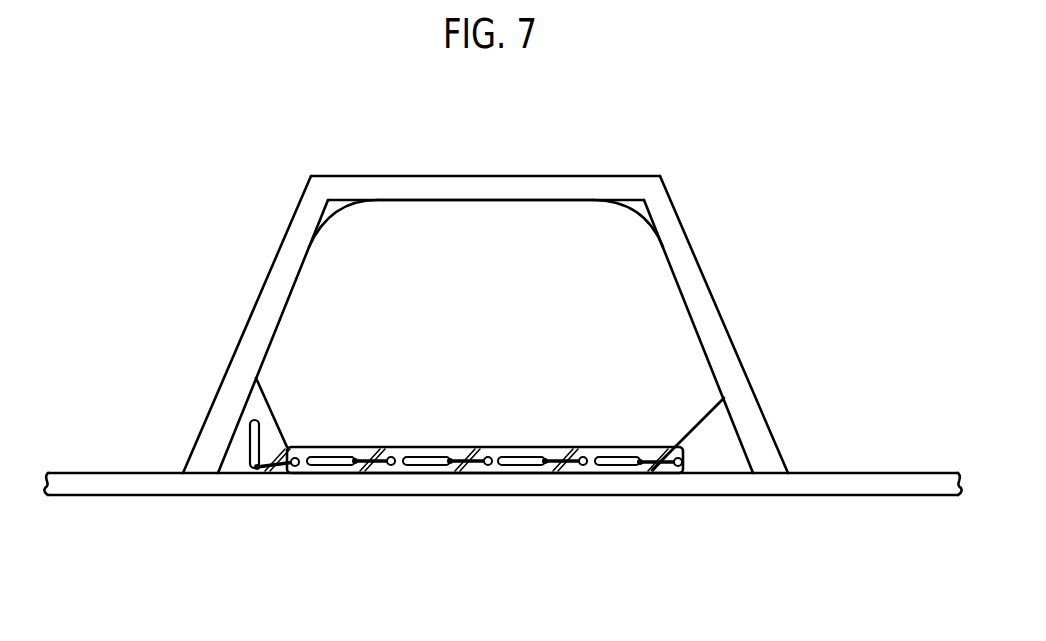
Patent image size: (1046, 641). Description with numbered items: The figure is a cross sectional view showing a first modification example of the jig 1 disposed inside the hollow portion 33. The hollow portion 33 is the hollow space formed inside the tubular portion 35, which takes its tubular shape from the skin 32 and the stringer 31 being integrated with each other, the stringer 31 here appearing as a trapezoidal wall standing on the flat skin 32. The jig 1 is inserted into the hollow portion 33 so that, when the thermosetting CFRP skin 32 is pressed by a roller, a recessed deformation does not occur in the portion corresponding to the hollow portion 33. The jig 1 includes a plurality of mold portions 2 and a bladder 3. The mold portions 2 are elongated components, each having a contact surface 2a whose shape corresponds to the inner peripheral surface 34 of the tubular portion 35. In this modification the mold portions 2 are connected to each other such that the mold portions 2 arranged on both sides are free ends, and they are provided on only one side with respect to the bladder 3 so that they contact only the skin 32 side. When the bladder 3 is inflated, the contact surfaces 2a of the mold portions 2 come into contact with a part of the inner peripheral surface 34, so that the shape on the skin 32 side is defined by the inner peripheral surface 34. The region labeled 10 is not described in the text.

The jig 1 is at (502, 331).
The mold portion 2 is at (232, 460).
The contact surface 2a is at (233, 423).
The bladder 3 is at (639, 213).
The accommodating space 10 is at (413, 225).
The stringer 31 is at (700, 293).
The skin 32 is at (860, 486).
The hollow portion 33 is at (722, 386).
The inner peripheral surface 34 is at (527, 462).
The tubular portion 35 is at (488, 188).